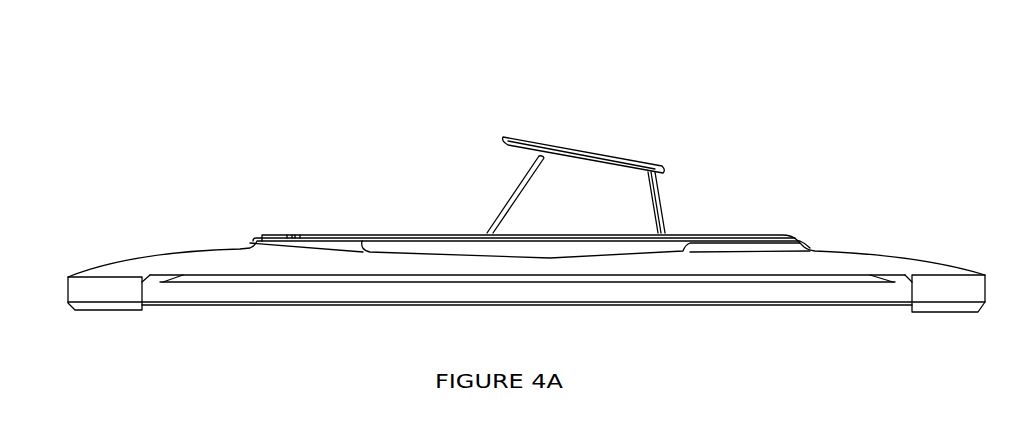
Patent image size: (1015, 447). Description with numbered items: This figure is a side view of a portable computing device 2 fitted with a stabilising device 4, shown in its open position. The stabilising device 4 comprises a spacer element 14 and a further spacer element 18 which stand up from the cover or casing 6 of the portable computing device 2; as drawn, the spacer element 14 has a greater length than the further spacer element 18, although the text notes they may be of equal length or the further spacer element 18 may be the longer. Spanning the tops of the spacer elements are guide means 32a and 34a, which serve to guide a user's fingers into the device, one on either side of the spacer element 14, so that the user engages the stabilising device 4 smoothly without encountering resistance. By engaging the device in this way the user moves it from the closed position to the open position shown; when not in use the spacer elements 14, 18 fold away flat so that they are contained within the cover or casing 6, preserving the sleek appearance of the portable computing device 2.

The stabilising device 4 is at (133, 35).
The portable computing device 2 is at (278, 302).
The cover or casing 6 is at (200, 250).
The spacer element 14 is at (500, 193).
The further spacer element 18 is at (660, 194).
The guide means 32a is at (503, 137).
The guide means 34a is at (581, 111).